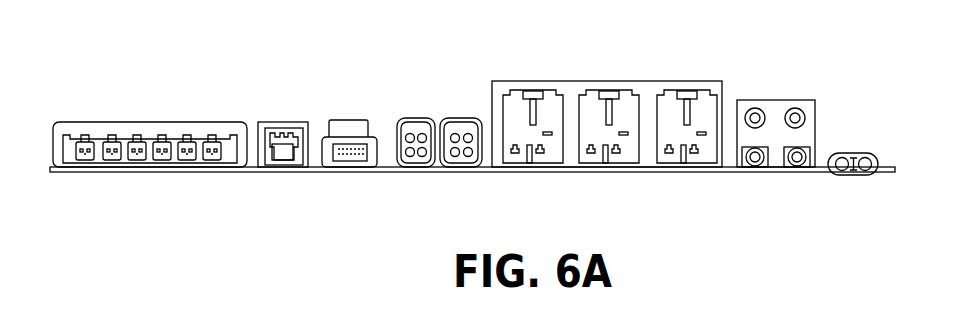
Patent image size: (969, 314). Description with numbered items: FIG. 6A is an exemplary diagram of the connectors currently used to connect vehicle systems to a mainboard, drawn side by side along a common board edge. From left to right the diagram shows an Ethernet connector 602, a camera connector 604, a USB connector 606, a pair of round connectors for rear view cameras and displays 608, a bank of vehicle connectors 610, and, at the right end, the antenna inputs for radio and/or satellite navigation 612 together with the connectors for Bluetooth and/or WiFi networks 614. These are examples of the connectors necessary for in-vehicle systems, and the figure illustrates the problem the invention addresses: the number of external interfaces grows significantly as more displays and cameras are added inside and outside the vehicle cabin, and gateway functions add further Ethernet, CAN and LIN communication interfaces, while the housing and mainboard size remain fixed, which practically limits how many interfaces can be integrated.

The Ethernet connector 602 is at (112, 122).
The camera connector 604 is at (280, 121).
The USB connector 606 is at (343, 120).
The rear view cameras and displays connectors 608 is at (458, 118).
The vehicle connectors 610 is at (575, 85).
The antenna inputs for radio and/or satellite navigation inputs 612 is at (773, 107).
The Bluetooth and/or WiFi network connectors 614 is at (853, 164).